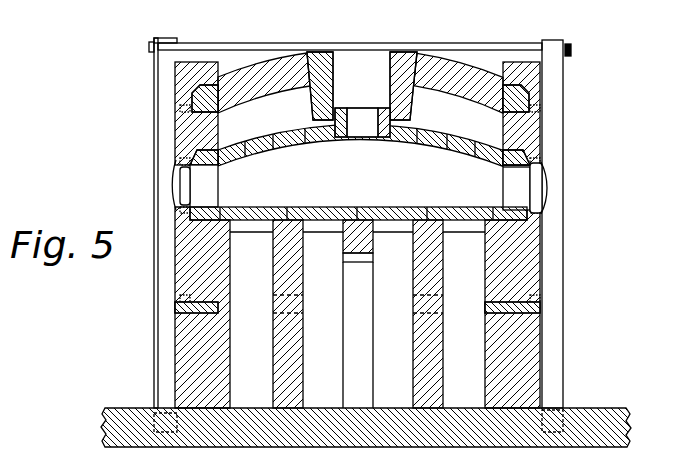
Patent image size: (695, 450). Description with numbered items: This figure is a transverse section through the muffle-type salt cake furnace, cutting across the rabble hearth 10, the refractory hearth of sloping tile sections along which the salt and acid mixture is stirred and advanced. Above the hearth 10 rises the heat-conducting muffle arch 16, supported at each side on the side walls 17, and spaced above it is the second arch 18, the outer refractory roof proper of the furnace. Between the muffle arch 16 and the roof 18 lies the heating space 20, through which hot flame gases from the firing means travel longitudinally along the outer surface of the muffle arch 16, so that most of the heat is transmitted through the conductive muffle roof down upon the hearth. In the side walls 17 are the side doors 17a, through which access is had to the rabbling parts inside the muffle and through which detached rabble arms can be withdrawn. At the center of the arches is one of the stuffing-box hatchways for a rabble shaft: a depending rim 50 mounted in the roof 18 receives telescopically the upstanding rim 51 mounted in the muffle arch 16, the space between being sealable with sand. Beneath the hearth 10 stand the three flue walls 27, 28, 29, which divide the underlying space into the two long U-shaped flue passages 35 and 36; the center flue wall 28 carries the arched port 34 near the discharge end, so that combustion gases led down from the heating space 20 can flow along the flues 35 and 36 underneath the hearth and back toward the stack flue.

The hearth 10 is at (397, 207).
The muffle arch 16 is at (288, 141).
The side walls 17 is at (182, 141).
The side doors 17a is at (182, 188).
The second arch 18 is at (449, 66).
The heating space 20 is at (425, 91).
The flue wall 27 is at (303, 272).
The center flue wall 28 is at (373, 246).
The flue wall 29 is at (449, 263).
The arched port 34 is at (373, 317).
The flue passage 35 is at (357, 277).
The flue passage 36 is at (358, 298).
The depending rim 50 is at (313, 104).
The upstanding rim 51 is at (351, 134).